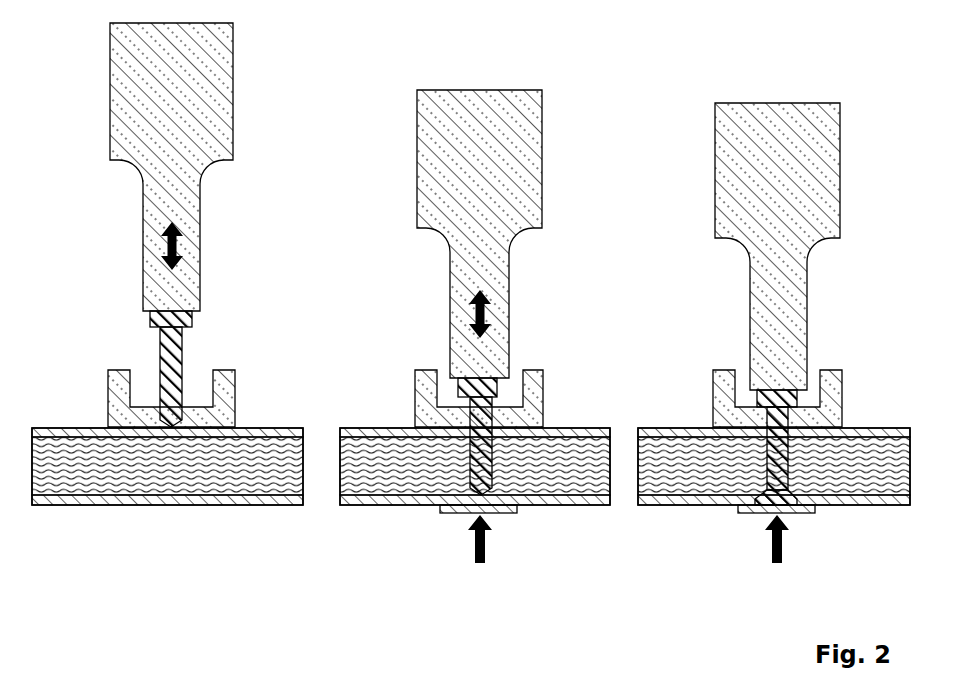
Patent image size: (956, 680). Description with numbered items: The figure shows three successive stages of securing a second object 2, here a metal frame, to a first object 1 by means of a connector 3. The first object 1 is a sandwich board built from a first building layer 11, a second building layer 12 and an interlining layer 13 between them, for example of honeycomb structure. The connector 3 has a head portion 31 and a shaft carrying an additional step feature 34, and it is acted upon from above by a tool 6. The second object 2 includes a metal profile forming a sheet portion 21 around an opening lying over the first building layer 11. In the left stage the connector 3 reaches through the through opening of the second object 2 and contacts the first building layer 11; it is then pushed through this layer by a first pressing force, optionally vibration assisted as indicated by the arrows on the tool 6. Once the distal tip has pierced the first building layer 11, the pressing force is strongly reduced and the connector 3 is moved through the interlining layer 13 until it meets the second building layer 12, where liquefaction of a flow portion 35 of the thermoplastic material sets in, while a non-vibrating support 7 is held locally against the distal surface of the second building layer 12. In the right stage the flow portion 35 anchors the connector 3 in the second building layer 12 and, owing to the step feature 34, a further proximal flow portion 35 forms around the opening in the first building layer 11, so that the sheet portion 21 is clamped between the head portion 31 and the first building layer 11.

The first object 1 is at (471, 466).
The first building layer 11 is at (267, 445).
The second building layer 12 is at (183, 504).
The interlining layer 13 is at (72, 462).
The second object 2 is at (441, 365).
The sheet portion 21 is at (218, 419).
The connector 3 is at (471, 420).
The head portion 31 is at (193, 322).
The step feature 34 is at (182, 353).
The flow portion 35 is at (791, 500).
The sonotrode 6 is at (183, 83).
The non-vibrating support 7 is at (490, 512).